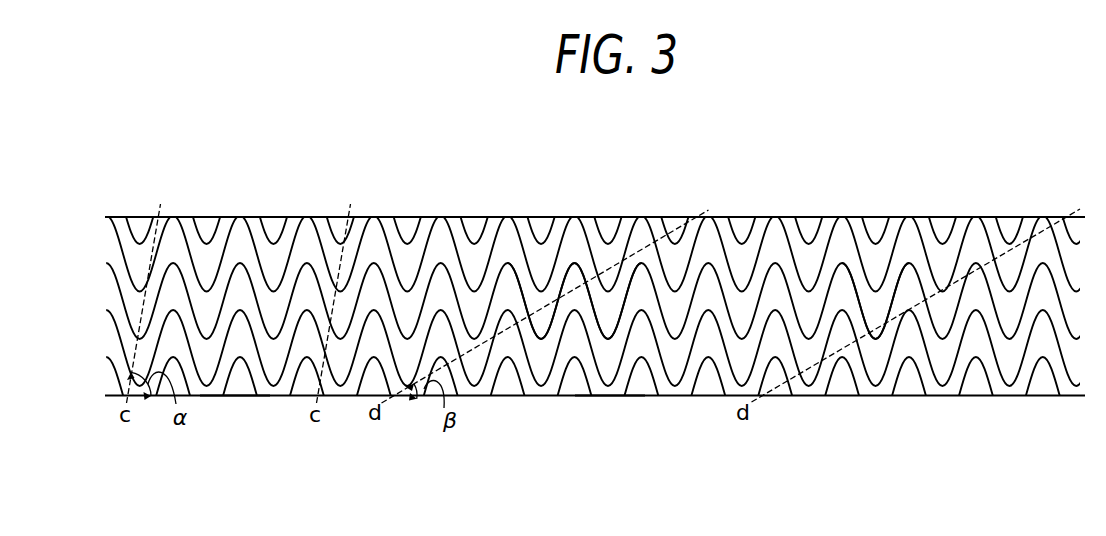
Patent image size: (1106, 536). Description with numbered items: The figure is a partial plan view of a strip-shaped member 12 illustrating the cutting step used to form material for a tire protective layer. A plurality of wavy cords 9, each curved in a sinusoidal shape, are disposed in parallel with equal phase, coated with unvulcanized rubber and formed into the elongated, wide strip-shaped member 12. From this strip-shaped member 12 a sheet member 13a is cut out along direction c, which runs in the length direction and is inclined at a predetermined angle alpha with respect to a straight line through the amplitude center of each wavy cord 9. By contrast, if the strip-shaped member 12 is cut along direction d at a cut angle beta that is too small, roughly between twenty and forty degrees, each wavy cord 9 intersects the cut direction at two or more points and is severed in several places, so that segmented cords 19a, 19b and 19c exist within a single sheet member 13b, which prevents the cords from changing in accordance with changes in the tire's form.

The wavy cord 9 is at (423, 242).
The strip-shaped member 12 is at (942, 396).
The sheet member 13a is at (233, 396).
The sheet member 13b is at (612, 396).
The segmented cord 19a is at (555, 303).
The segmented cord 19b is at (598, 303).
The segmented cord 19c is at (897, 288).